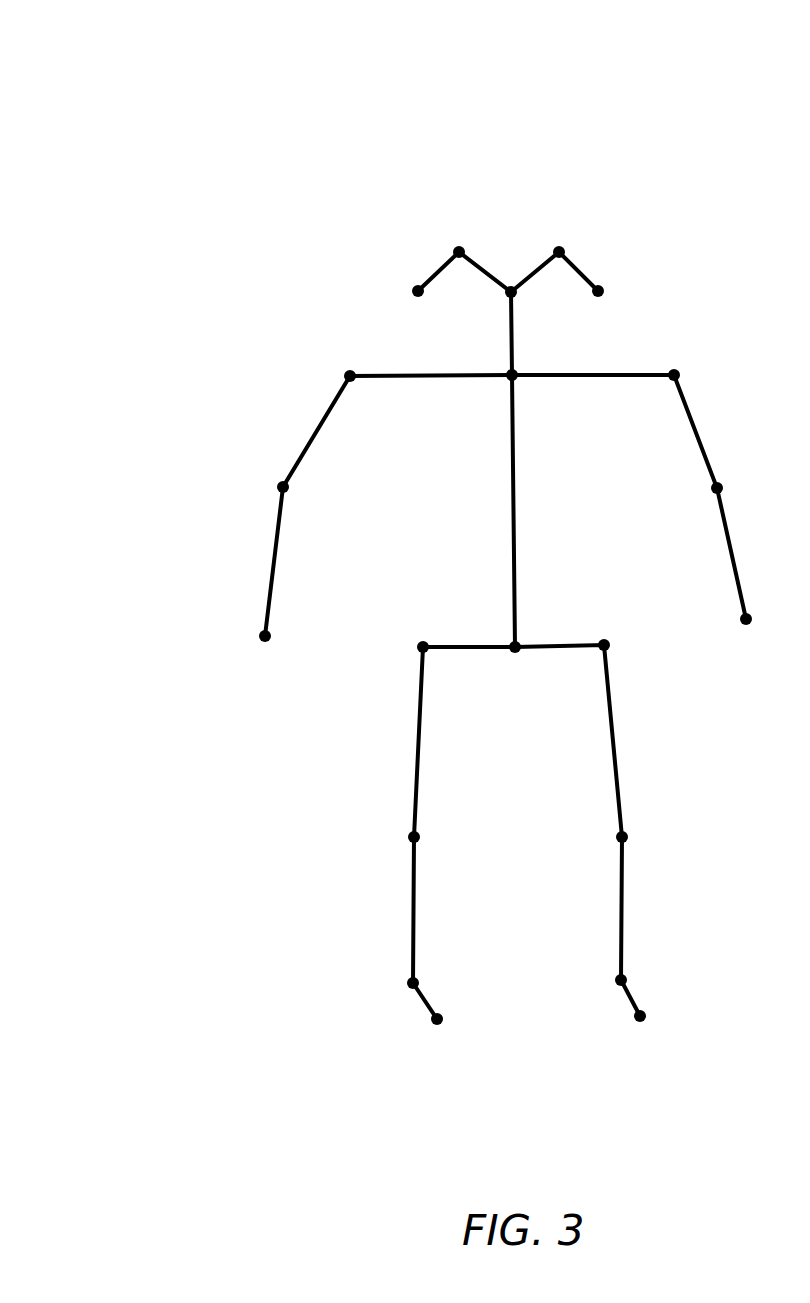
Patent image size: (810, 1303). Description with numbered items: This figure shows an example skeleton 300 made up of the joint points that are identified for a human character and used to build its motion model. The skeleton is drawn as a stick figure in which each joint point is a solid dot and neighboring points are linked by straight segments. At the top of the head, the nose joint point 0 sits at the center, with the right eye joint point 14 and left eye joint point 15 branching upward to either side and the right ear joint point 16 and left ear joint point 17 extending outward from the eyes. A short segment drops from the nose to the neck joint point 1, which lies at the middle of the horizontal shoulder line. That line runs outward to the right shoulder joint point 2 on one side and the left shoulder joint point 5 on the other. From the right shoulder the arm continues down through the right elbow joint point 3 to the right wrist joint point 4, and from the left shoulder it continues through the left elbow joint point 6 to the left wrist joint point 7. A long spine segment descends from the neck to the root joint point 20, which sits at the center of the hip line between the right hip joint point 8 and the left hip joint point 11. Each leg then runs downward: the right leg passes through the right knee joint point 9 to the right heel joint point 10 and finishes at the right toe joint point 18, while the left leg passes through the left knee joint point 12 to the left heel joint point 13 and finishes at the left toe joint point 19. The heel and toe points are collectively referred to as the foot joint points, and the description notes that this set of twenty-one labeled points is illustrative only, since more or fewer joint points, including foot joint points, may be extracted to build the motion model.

The skeleton body model / joint map 300 is at (127, 77).
The nose joint point 0 is at (520, 304).
The neck joint point 1 is at (521, 362).
The right shoulder joint point 2 is at (351, 397).
The right elbow joint point 3 is at (300, 502).
The right wrist joint point 4 is at (274, 656).
The left shoulder joint point 5 is at (666, 406).
The left elbow joint point 6 is at (700, 497).
The left wrist joint point 7 is at (731, 620).
The right hip joint point 8 is at (432, 661).
The right knee joint point 9 is at (430, 841).
The right heel joint point 10 is at (432, 980).
The left hip joint point 11 is at (623, 649).
The left knee joint point 12 is at (641, 841).
The left heel joint point 13 is at (637, 979).
The right eye joint point 14 is at (465, 240).
The left eye joint point 15 is at (564, 240).
The right ear joint point 16 is at (400, 294).
The left ear joint point 17 is at (618, 294).
The right toe joint point 18 is at (442, 1034).
The left toe joint point 19 is at (643, 1031).
The root joint point 20 is at (516, 663).